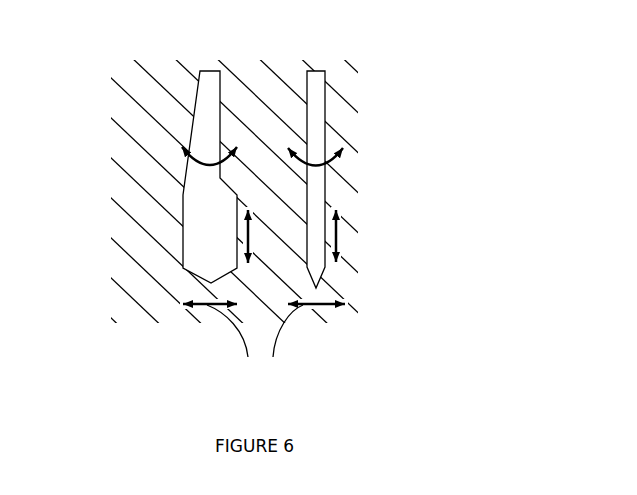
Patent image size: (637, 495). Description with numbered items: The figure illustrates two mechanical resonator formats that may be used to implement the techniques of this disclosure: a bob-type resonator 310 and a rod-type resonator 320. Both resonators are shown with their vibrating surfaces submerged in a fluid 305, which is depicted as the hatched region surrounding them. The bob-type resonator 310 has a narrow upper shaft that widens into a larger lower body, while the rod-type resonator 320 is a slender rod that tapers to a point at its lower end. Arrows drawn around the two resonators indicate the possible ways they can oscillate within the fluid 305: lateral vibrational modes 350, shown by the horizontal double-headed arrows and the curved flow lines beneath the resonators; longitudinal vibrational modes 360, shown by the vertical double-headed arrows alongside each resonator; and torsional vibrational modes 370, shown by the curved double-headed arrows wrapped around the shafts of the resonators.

The fluid 305 is at (160, 105).
The bob-type resonator 310 is at (183, 218).
The rod-type resonator 320 is at (326, 105).
The lateral vibrational modes 350 is at (255, 348).
The longitudinal vibrational modes 360 is at (250, 239).
The torsional vibrational modes 370 is at (224, 163).